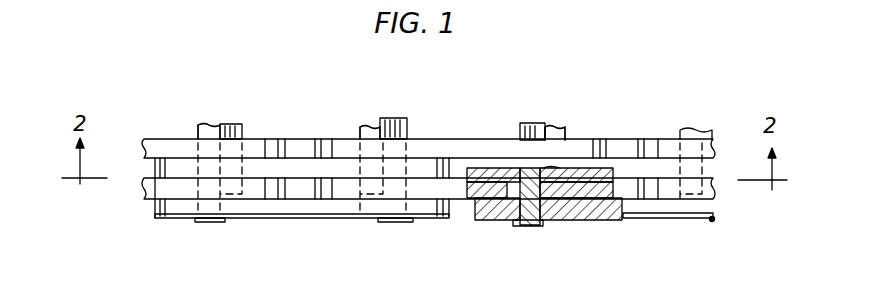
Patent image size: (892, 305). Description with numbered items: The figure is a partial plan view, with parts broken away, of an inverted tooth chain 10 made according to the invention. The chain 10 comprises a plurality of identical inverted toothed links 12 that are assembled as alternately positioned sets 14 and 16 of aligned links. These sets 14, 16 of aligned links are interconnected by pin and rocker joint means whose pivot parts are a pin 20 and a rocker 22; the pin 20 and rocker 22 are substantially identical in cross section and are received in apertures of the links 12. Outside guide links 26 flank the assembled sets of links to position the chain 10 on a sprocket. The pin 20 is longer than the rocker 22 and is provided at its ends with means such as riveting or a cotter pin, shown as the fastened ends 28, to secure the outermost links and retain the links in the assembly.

The inverted tooth chain 10 is at (698, 104).
The inverted toothed links 12 is at (283, 138).
The set of aligned links 14 is at (142, 150).
The set of aligned links 16 is at (447, 183).
The pin 20 is at (205, 128).
The rocker 22 is at (228, 127).
The outside guide links 26 is at (283, 212).
The tab 28 is at (207, 223).